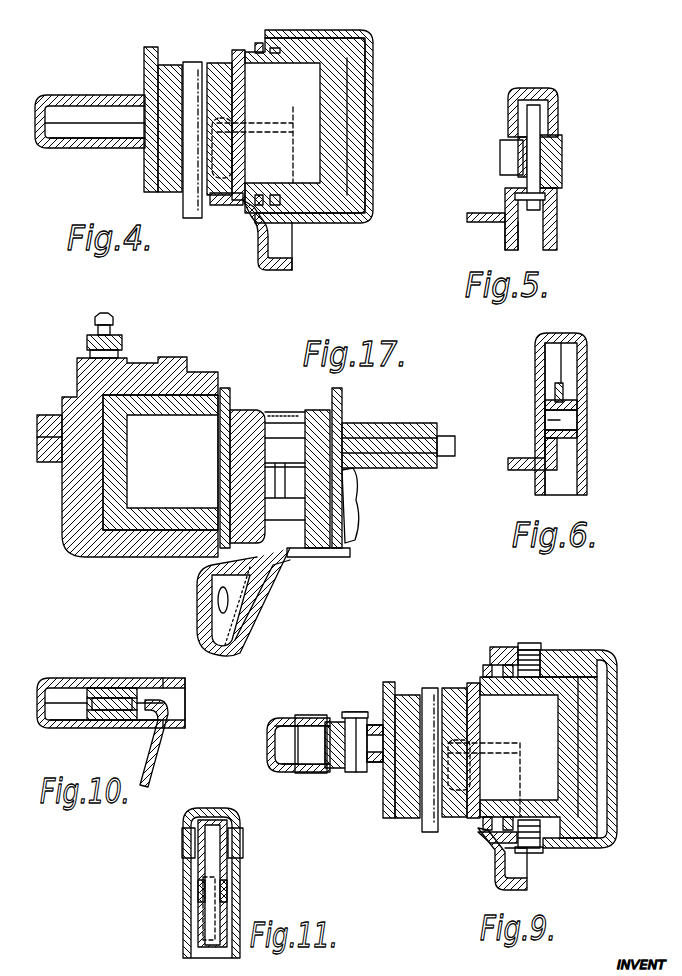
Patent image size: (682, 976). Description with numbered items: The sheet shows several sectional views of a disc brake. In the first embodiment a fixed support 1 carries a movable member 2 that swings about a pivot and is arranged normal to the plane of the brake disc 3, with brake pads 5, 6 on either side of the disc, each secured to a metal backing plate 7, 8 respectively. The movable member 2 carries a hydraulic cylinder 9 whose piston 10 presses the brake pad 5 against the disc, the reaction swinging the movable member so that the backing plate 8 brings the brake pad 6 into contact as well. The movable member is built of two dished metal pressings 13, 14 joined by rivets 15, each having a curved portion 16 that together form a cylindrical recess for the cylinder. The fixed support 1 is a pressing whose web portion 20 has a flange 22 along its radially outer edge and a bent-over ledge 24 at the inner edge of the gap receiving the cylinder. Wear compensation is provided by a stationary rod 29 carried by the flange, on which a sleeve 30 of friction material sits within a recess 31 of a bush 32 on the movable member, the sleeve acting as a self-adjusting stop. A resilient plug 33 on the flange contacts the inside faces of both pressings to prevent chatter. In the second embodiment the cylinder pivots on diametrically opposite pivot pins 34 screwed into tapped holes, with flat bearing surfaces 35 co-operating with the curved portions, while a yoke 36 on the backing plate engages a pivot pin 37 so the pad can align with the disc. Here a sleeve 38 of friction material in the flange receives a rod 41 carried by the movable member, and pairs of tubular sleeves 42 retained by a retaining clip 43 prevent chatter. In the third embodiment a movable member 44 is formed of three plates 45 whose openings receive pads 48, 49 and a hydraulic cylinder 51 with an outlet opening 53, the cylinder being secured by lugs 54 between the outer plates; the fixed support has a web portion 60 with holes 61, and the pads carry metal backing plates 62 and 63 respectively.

In FIG. 4, the fixed support 1 is at (282, 247).
In FIG. 10, the fixed support 1 is at (164, 771).
In FIG. 9, the fixed support 1 is at (494, 880).
In FIG. 9, the movable member 2 is at (278, 717).
In FIG. 4, the brake disc 3 is at (183, 200).
In FIG. 9, the brake disc 3 is at (430, 830).
In FIG. 4, the brake pad 5 is at (218, 62).
In FIG. 9, the brake pad 5 is at (452, 697).
In FIG. 4, the brake pad 6 is at (170, 68).
In FIG. 9, the brake pad 6 is at (405, 702).
In FIG. 4, the metal backing plate 7 is at (238, 50).
In FIG. 9, the metal backing plate 7 is at (472, 690).
In FIG. 4, the metal backing plate 8 is at (148, 62).
In FIG. 9, the metal backing plate 8 is at (383, 690).
In FIG. 4, the hydraulic cylinder 9 is at (362, 107).
In FIG. 9, the hydraulic cylinder 9 is at (590, 700).
In FIG. 4, the piston 10 is at (252, 45).
In FIG. 9, the piston 10 is at (483, 672).
In FIG. 4, the dished metal pressing 13 is at (82, 96).
In FIG. 6, the dished metal pressing 13 is at (584, 362).
In FIG. 10, the dished metal pressing 13 is at (68, 680).
In FIG. 11, the dished metal pressing 13 is at (233, 815).
In FIG. 9, the dished metal pressing 13 is at (270, 726).
In FIG. 4, the dished metal pressing 14 is at (82, 146).
In FIG. 6, the dished metal pressing 14 is at (540, 360).
In FIG. 10, the dished metal pressing 14 is at (70, 730).
In FIG. 11, the dished metal pressing 14 is at (191, 815).
In FIG. 9, the dished metal pressing 14 is at (270, 758).
In FIG. 9, the rivets 15 is at (306, 766).
In FIG. 4, the curved portion 16 is at (373, 162).
In FIG. 9, the curved portion 16 is at (600, 772).
In FIG. 4, the web portion 20 is at (258, 257).
In FIG. 4, the flange 22 is at (293, 118).
In FIG. 6, the flange 22 is at (566, 392).
In FIG. 10, the flange 22 is at (186, 712).
In FIG. 9, the flange 22 is at (484, 778).
In FIG. 4, the ledge 24 is at (224, 205).
In FIG. 5, the stationary rod 29 is at (534, 117).
In FIG. 5, the sleeve of friction material 30 is at (514, 175).
In FIG. 5, the recess 31 is at (500, 155).
In FIG. 5, the bush 32 is at (562, 160).
In FIG. 6, the plug of resilient material 33 is at (546, 405).
In FIG. 9, the pivot pin 34 is at (532, 642).
In FIG. 9, the flat bearing surface 35 is at (512, 647).
In FIG. 9, the yoke 36 is at (372, 776).
In FIG. 9, the pivot pin 37 is at (352, 720).
In FIG. 11, the sleeve of friction material 38 is at (198, 890).
In FIG. 11, the rod 41 is at (216, 865).
In FIG. 10, the tubular sleeves 42 is at (120, 688).
In FIG. 10, the retaining clip 43 is at (95, 722).
In FIG. 17, the movable member 44 is at (411, 421).
In FIG. 17, the plates 45 is at (50, 428).
In FIG. 17, the brake pad 48 is at (262, 418).
In FIG. 17, the brake pad 49 is at (320, 530).
In FIG. 17, the hydraulic cylinder 51 is at (143, 372).
In FIG. 17, the outlet opening 53 is at (114, 318).
In FIG. 17, the lugs 54 is at (137, 522).
In FIG. 17, the web portion 60 is at (199, 606).
In FIG. 17, the holes 61 is at (229, 604).
In FIG. 17, the metal backing plate 62 is at (231, 400).
In FIG. 17, the metal backing plate 63 is at (342, 405).